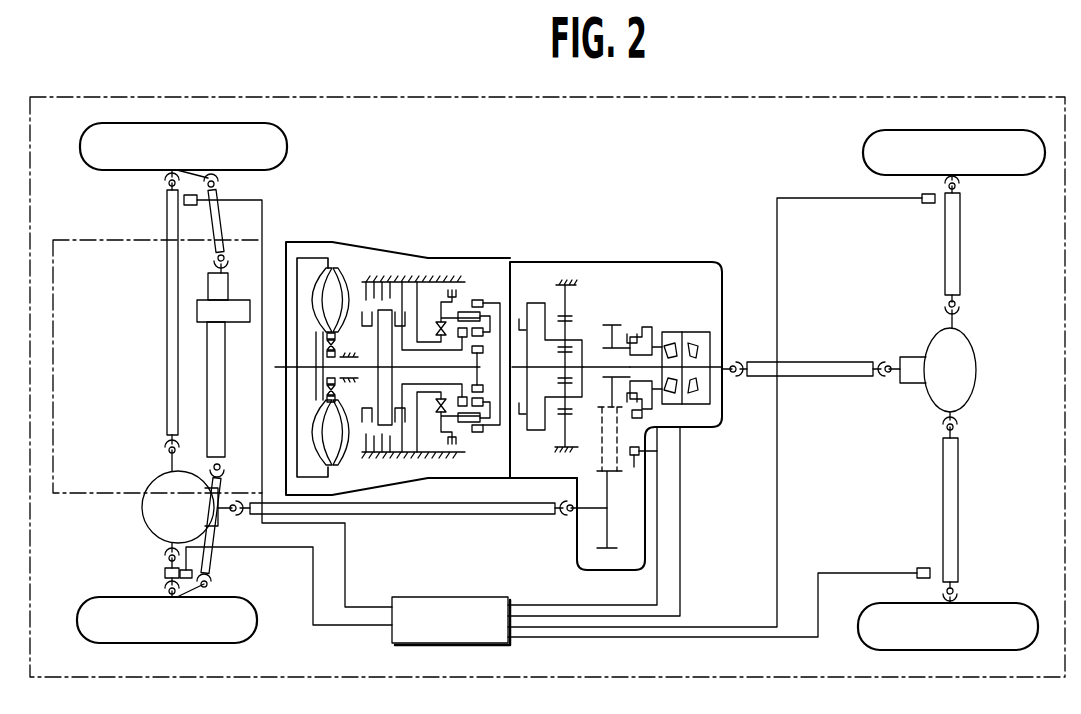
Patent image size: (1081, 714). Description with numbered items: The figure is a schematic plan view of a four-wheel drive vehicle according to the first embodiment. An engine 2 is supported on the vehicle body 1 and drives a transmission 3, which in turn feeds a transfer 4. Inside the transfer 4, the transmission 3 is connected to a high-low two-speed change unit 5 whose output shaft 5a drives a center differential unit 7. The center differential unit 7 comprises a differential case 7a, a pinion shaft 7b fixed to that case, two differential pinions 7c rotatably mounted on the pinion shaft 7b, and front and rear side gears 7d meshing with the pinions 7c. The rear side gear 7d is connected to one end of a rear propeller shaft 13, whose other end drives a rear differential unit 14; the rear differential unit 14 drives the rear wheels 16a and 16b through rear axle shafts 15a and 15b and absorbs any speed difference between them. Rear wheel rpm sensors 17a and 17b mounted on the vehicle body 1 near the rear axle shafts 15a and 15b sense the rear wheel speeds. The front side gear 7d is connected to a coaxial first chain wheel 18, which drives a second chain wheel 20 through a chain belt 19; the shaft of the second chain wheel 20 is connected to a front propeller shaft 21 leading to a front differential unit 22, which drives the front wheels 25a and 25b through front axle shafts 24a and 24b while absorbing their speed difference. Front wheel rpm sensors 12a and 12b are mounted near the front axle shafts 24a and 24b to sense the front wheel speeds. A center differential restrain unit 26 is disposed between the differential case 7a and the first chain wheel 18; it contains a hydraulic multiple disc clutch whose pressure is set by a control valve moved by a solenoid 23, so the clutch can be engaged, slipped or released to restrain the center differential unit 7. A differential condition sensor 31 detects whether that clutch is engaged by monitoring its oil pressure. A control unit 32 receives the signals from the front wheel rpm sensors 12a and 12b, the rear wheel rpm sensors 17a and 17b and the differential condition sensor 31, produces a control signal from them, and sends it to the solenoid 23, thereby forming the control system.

The vehicle body 1 is at (945, 97).
The engine 2 is at (68, 238).
The transmission 3 is at (476, 258).
The transfer 4 is at (620, 262).
The high-low two-speed change unit 5 is at (535, 295).
The output shaft 5a is at (595, 365).
The center differential unit 7 is at (712, 366).
The differential case 7a is at (671, 332).
The pinion shaft 7b is at (697, 386).
The differential pinions 7c is at (675, 388).
The front and rear side gears 7d is at (697, 352).
The front wheel rpm sensor 12a is at (196, 206).
The front wheel rpm sensor 12b is at (192, 570).
The rear propeller shaft 13 is at (847, 362).
The rear differential unit 14 is at (976, 392).
The rear axle shaft 15a is at (945, 231).
The rear axle shaft 15b is at (943, 490).
The rear wheel 16a is at (865, 146).
The rear wheel 16b is at (1012, 603).
The rear wheel rpm sensor 17a is at (922, 197).
The rear wheel rpm sensor 17b is at (920, 568).
The first chain wheel 18 is at (612, 325).
The chain belt 19 is at (600, 450).
The second chain wheel 20 is at (608, 502).
The front propeller shaft 21 is at (447, 514).
The front differential unit 22 is at (143, 522).
The solenoid 23 is at (635, 472).
The front axle shaft 24a is at (167, 317).
The front axle shaft 24b is at (165, 573).
The front wheel 25a is at (287, 150).
The front wheel 25b is at (242, 598).
The center differential restrain unit 26 is at (649, 318).
The differential condition sensor 31 is at (642, 414).
The control unit 32 is at (497, 597).